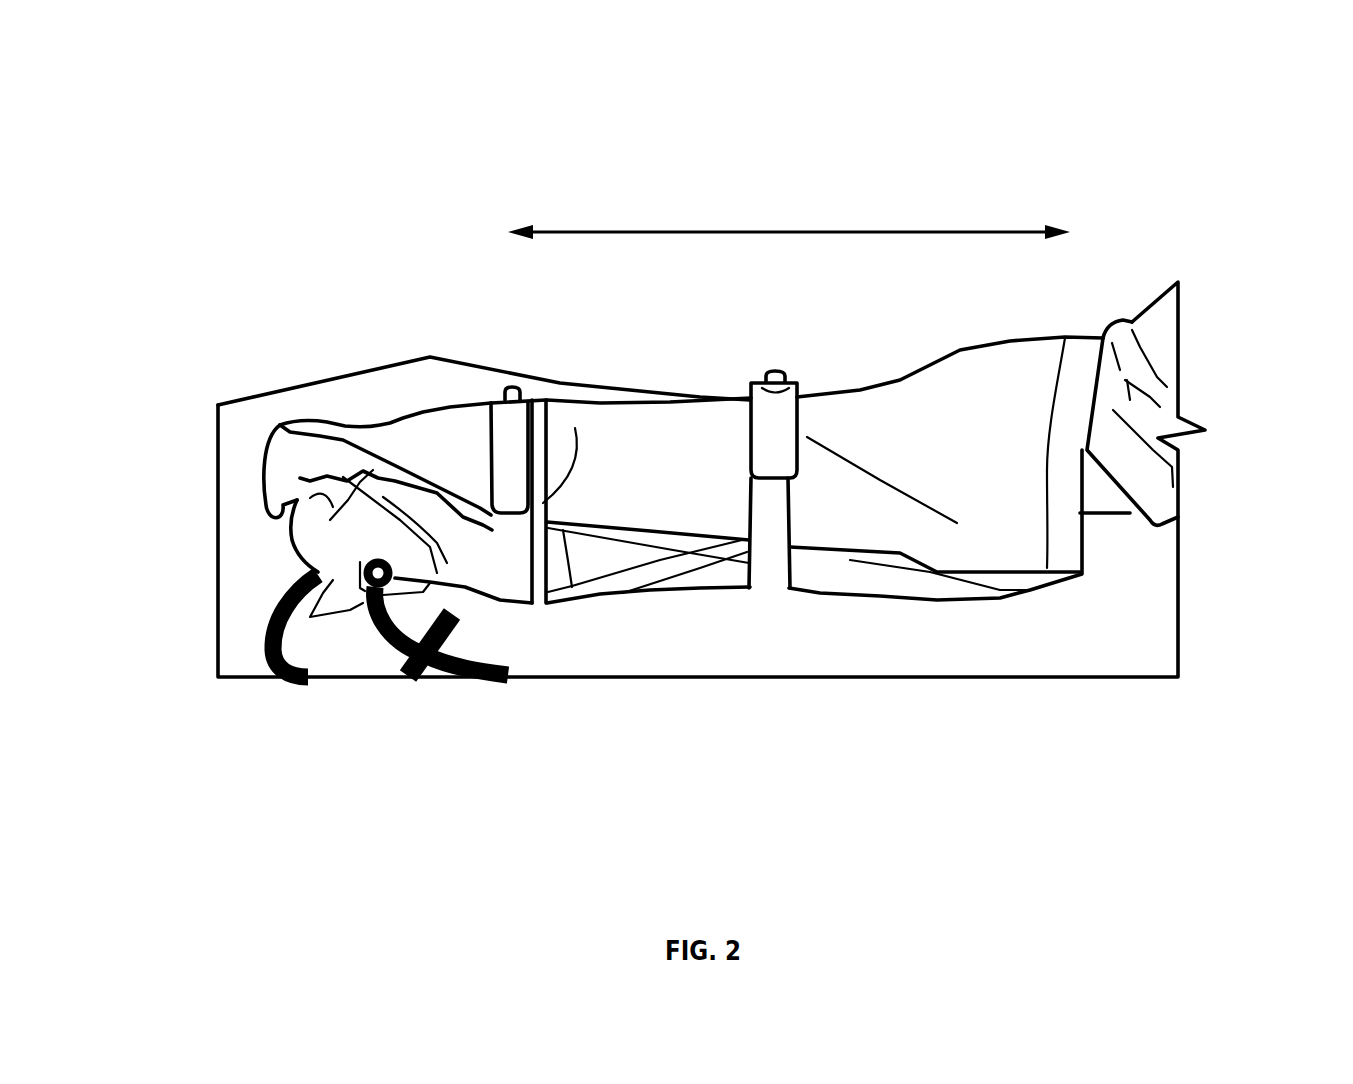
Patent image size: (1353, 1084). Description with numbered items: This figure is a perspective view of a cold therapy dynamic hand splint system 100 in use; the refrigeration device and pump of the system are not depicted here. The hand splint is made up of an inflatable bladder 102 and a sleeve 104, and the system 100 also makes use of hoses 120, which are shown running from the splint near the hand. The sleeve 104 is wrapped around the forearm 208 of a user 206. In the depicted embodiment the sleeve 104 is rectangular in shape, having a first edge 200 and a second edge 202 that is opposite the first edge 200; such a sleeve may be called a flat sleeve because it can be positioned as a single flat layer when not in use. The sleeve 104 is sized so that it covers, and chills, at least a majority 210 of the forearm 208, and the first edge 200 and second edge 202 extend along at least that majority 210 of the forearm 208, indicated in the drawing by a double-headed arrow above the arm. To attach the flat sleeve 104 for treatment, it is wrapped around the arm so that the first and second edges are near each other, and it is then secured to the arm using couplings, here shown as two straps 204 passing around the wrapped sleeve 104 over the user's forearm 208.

The cold therapy dynamic hand splint system 100 is at (1207, 153).
The inflatable bladder 102 is at (330, 546).
The sleeve 104 is at (977, 395).
The hoses 120 is at (268, 632).
The first edge 200 is at (655, 530).
The second edge 202 is at (590, 590).
The straps 204 is at (497, 555).
The user 206 is at (1125, 482).
The forearm 208 is at (672, 538).
The majority of the forearm 210 is at (868, 232).